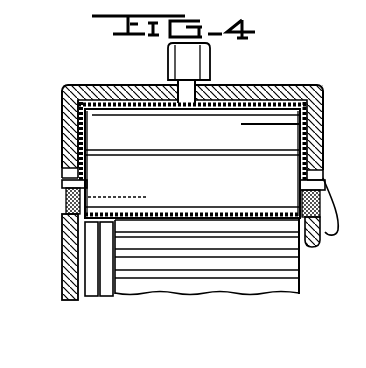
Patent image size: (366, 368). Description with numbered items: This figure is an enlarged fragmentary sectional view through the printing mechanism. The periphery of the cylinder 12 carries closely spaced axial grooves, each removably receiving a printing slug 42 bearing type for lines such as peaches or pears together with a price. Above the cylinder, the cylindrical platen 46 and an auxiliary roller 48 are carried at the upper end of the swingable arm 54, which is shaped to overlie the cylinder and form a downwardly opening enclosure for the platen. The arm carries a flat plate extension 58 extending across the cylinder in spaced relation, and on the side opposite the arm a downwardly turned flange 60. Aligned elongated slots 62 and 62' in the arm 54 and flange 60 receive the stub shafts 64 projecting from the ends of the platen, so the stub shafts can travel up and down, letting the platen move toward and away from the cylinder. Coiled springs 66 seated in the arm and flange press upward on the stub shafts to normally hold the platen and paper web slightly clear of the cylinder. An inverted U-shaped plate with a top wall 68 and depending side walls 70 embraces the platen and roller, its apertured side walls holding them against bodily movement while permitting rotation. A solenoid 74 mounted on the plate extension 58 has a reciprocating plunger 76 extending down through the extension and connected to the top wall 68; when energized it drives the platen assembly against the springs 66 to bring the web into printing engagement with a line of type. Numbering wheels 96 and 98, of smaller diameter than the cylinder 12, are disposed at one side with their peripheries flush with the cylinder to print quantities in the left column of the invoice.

The cylinder 12 is at (298, 277).
The printing slug 42 is at (234, 262).
The cylindrical platen 46 is at (206, 189).
The auxiliary roller 48 is at (286, 122).
The swingable arm 54 is at (314, 252).
The flat plate extension 58 is at (283, 90).
The downwardly turned flange 60 is at (68, 143).
The slot 62 is at (50, 170).
The ring 62' is at (334, 153).
The stub shaft 64 is at (68, 184).
The coiled spring 66 is at (66, 196).
The top wall 68 is at (113, 105).
The side wall 70 is at (86, 163).
The solenoid 74 is at (192, 60).
The reciprocating plunger 76 is at (180, 92).
The numbering wheel 96 is at (90, 297).
The numbering wheel 98 is at (108, 297).